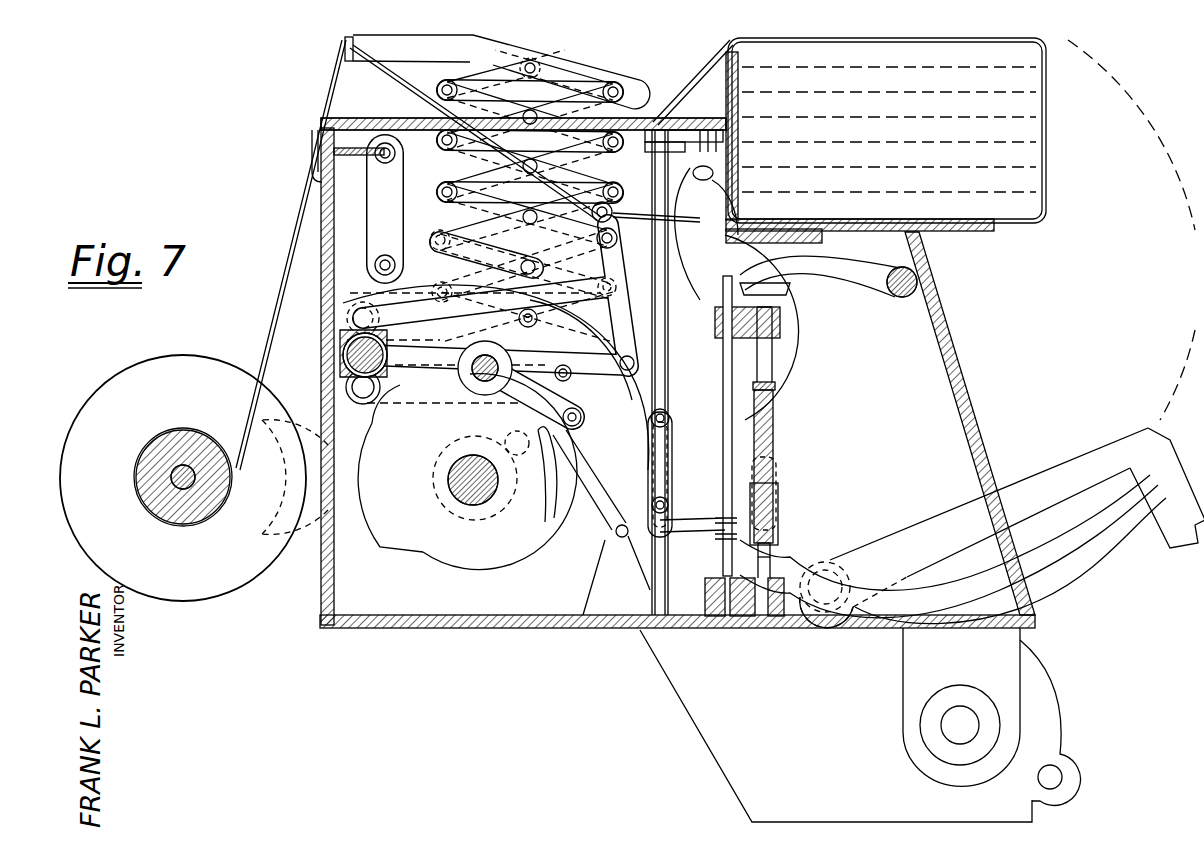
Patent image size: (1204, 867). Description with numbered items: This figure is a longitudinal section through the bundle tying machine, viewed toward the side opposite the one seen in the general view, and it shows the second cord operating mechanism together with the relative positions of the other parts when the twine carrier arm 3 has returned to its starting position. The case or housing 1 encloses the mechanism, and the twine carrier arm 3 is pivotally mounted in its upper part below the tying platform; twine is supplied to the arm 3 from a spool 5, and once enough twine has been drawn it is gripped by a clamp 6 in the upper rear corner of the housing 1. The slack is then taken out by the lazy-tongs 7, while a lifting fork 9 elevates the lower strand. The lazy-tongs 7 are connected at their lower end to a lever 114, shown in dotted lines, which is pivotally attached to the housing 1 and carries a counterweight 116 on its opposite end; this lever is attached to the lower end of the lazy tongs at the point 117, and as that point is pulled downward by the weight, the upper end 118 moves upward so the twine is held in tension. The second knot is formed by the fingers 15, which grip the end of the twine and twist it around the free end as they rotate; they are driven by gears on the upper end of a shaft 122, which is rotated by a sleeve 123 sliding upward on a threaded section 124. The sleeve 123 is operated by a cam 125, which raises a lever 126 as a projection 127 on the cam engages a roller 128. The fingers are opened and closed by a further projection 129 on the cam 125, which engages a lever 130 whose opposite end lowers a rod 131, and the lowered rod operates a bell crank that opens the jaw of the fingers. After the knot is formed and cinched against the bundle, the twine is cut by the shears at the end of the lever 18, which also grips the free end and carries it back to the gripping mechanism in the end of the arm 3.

The case or housing 1 is at (945, 330).
The twine carrier arm 3 is at (1080, 540).
The spool 5 is at (200, 362).
The clamp 6 is at (316, 182).
The lazy-tongs 7 is at (622, 100).
The lifting fork 9 is at (657, 178).
The fingers 15 is at (734, 178).
The lever 18 is at (1110, 452).
The lever 114 is at (518, 342).
The counterweight 116 is at (775, 385).
The pivot point 117 is at (512, 315).
The upper end of lazy tongs 118 is at (536, 68).
The shaft 122 is at (768, 372).
The sleeve 123 is at (782, 498).
The threaded section 124 is at (774, 417).
The cam 125 is at (503, 565).
The lever 126 is at (638, 450).
The projection 127 is at (380, 548).
The roller 128 is at (478, 360).
The projection 129 is at (558, 462).
The lever 130 is at (610, 520).
The rod 131 is at (695, 447).